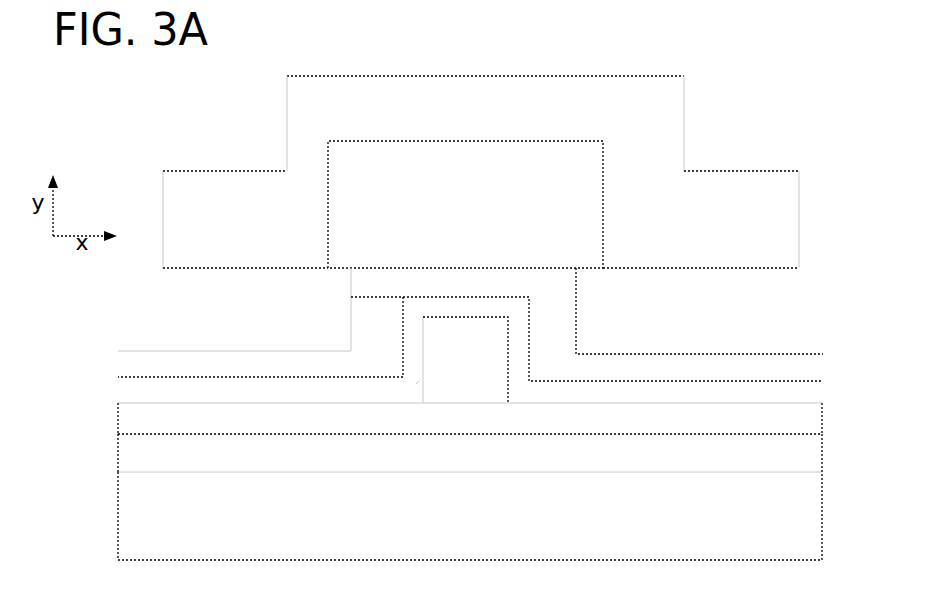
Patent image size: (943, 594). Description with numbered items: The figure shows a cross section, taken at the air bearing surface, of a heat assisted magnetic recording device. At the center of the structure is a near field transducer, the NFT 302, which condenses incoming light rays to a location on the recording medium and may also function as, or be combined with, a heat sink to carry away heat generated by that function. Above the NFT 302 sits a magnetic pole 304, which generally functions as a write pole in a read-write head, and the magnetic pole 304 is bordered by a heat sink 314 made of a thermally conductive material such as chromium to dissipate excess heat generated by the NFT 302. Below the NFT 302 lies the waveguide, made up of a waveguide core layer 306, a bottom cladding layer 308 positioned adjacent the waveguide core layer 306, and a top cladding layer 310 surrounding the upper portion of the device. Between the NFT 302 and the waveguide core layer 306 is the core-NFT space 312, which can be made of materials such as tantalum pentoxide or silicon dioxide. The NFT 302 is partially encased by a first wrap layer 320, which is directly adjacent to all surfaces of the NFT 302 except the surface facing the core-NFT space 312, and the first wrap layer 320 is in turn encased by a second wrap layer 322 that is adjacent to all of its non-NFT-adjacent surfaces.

The NFT 302 is at (444, 371).
The magnetic pole 304 is at (443, 216).
The waveguide core layer 306 is at (448, 465).
The bottom cladding layer 308 is at (448, 526).
The top cladding layer 310 is at (165, 133).
The core-NFT space 312 is at (448, 430).
The heat sink 314 is at (446, 128).
The first wrap layer 320 is at (418, 382).
The second wrap layer 322 is at (359, 296).